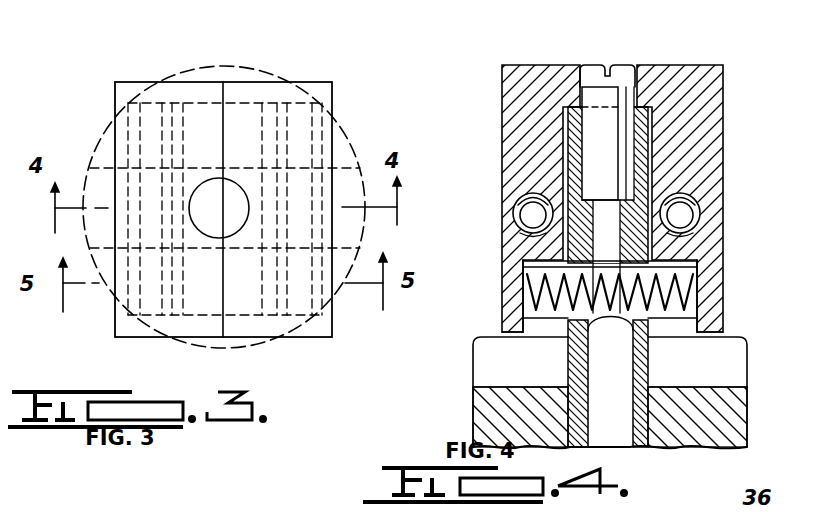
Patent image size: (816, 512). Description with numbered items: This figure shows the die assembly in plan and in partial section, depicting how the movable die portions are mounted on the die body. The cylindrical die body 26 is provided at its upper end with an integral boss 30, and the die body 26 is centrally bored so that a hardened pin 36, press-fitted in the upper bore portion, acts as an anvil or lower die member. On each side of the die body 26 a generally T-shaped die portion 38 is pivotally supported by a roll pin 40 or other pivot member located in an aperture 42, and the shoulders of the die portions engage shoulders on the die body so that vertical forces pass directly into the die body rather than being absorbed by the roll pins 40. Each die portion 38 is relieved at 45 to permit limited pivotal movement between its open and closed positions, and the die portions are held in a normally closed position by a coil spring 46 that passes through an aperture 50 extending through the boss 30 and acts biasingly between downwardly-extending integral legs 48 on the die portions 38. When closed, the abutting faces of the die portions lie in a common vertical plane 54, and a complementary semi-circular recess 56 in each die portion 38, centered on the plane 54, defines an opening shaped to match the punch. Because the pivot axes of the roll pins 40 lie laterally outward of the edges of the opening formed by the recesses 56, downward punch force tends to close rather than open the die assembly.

In FIG. 3, the die body 26 is at (101, 153).
In FIG. 4, the die body 26 is at (712, 410).
In FIG. 4, the boss 30 is at (640, 157).
In FIG. 4, the hardened pin 36 is at (612, 156).
In FIG. 3, the die portion 38 is at (127, 88).
In FIG. 4, the die portion 38 is at (517, 83).
In FIG. 4, the roll pin 40 is at (530, 201).
In FIG. 4, the aperture 42 is at (548, 219).
In FIG. 4, the relief 45 is at (548, 252).
In FIG. 4, the coil spring 46 is at (678, 298).
In FIG. 4, the leg 48 is at (520, 301).
In FIG. 4, the aperture 50 is at (640, 268).
In FIG. 3, the vertical plane 54 is at (224, 112).
In FIG. 3, the semi-circular recess 56 is at (245, 200).
In FIG. 4, the semi-circular recess 56 is at (594, 70).